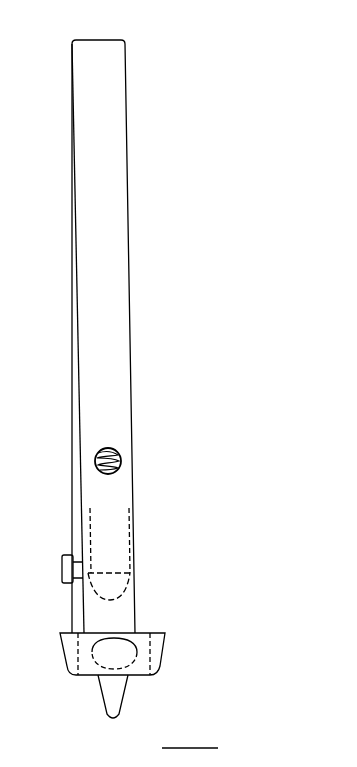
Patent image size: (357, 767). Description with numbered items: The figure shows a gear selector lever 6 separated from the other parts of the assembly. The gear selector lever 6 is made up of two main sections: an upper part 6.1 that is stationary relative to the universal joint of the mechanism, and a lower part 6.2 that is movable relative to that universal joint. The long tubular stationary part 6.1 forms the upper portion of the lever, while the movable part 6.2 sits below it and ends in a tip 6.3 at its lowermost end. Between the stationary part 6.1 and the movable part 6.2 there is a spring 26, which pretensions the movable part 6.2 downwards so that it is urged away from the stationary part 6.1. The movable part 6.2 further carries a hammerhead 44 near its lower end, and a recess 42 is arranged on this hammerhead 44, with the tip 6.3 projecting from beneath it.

The gear selector lever 6 is at (160, 147).
The stationary part 6.1 is at (103, 229).
The movable part 6.2 is at (102, 620).
The tip 6.3 is at (108, 712).
The spring 26 is at (121, 461).
The recess 42 is at (113, 655).
The hammerhead 44 is at (162, 633).